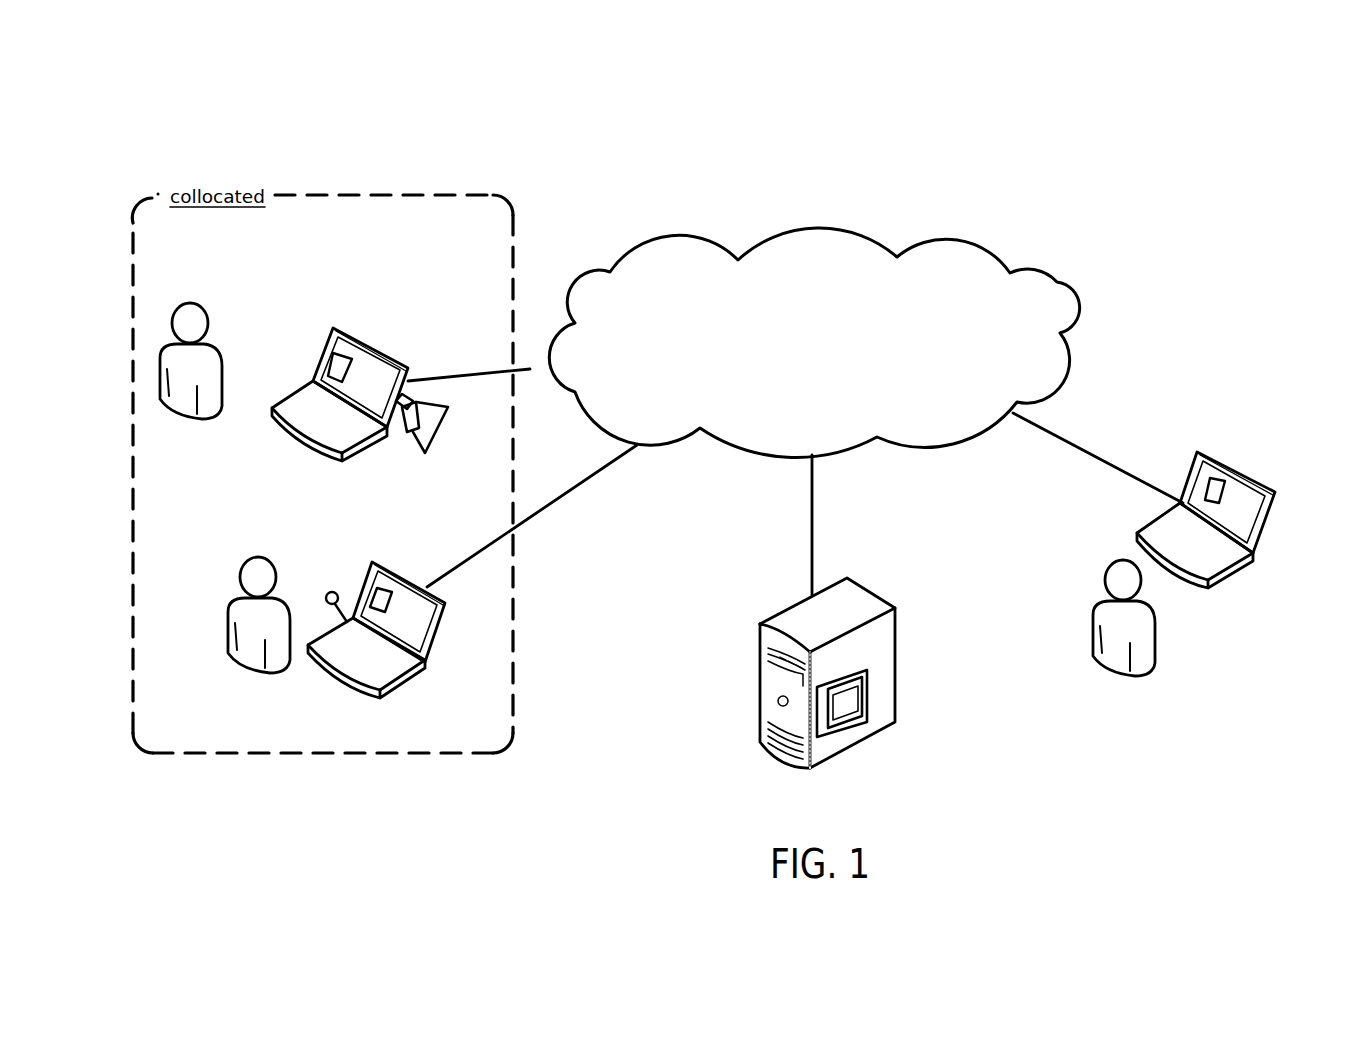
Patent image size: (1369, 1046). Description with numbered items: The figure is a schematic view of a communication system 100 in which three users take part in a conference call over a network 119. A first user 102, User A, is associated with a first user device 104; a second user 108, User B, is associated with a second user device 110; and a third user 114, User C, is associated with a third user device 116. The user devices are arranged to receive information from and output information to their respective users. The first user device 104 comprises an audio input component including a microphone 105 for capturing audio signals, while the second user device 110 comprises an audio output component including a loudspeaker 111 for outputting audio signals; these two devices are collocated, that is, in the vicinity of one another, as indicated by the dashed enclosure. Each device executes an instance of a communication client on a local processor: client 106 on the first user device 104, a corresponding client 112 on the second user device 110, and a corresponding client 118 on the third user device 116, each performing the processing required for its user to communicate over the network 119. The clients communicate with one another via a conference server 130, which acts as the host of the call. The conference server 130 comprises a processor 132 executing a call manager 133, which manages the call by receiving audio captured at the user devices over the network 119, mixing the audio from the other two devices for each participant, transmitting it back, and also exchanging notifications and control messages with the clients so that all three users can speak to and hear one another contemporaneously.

The communication system 100 is at (330, 116).
The first user 102 is at (230, 643).
The first user device 104 is at (432, 660).
The microphone 105 is at (328, 592).
The communication client 106 is at (383, 586).
The second user 108 is at (217, 358).
The second user device 110 is at (384, 350).
The loudspeaker 111 is at (448, 410).
The communication client 112 is at (340, 364).
The third user 114 is at (1152, 658).
The third user device 116 is at (1267, 518).
The communication client 118 is at (1215, 480).
The network 119 is at (1057, 282).
The conference server 130 is at (883, 632).
The processor 132 is at (857, 724).
The call manager 133 is at (862, 693).